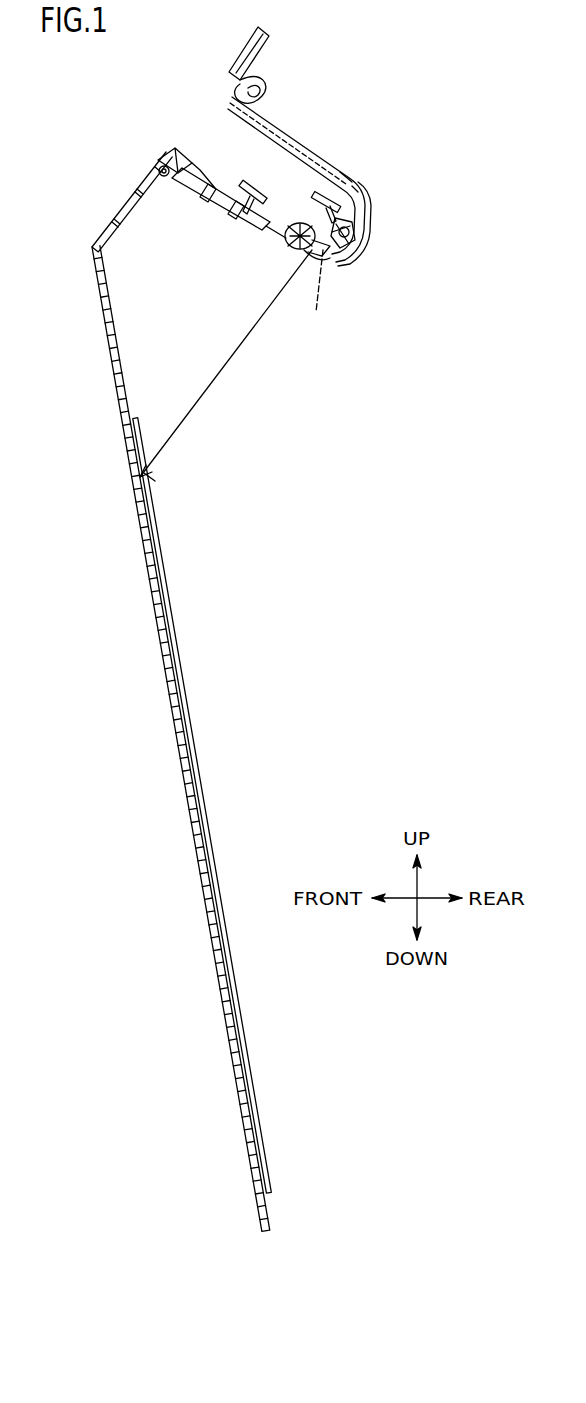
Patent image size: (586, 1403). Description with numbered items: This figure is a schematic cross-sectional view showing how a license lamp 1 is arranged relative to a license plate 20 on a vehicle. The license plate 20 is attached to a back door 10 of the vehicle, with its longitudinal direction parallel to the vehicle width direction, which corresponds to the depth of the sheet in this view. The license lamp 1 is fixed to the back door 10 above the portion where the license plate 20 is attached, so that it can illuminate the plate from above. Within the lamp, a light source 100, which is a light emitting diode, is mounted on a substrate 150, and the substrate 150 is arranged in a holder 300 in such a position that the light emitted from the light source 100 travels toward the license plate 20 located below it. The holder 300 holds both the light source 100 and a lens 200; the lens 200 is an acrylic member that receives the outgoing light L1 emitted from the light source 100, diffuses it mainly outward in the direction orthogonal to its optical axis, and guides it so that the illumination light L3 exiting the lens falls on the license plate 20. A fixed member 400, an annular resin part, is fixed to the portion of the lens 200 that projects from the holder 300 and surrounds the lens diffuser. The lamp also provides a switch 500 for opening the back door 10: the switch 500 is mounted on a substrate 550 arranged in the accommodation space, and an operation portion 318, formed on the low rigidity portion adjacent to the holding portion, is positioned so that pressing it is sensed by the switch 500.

The license lamp 1 is at (373, 101).
The back door 10 is at (113, 367).
The license plate 20 is at (147, 503).
The light source 100 is at (363, 220).
The substrate 150 is at (346, 188).
The lens 200 is at (335, 258).
The holder 300 is at (380, 189).
The operation portion 318 is at (236, 212).
The fixed member 400 is at (360, 227).
The switch 500 is at (243, 191).
The substrate 550 is at (312, 192).
The outgoing light L1 is at (319, 294).
The illumination light L3 is at (228, 364).